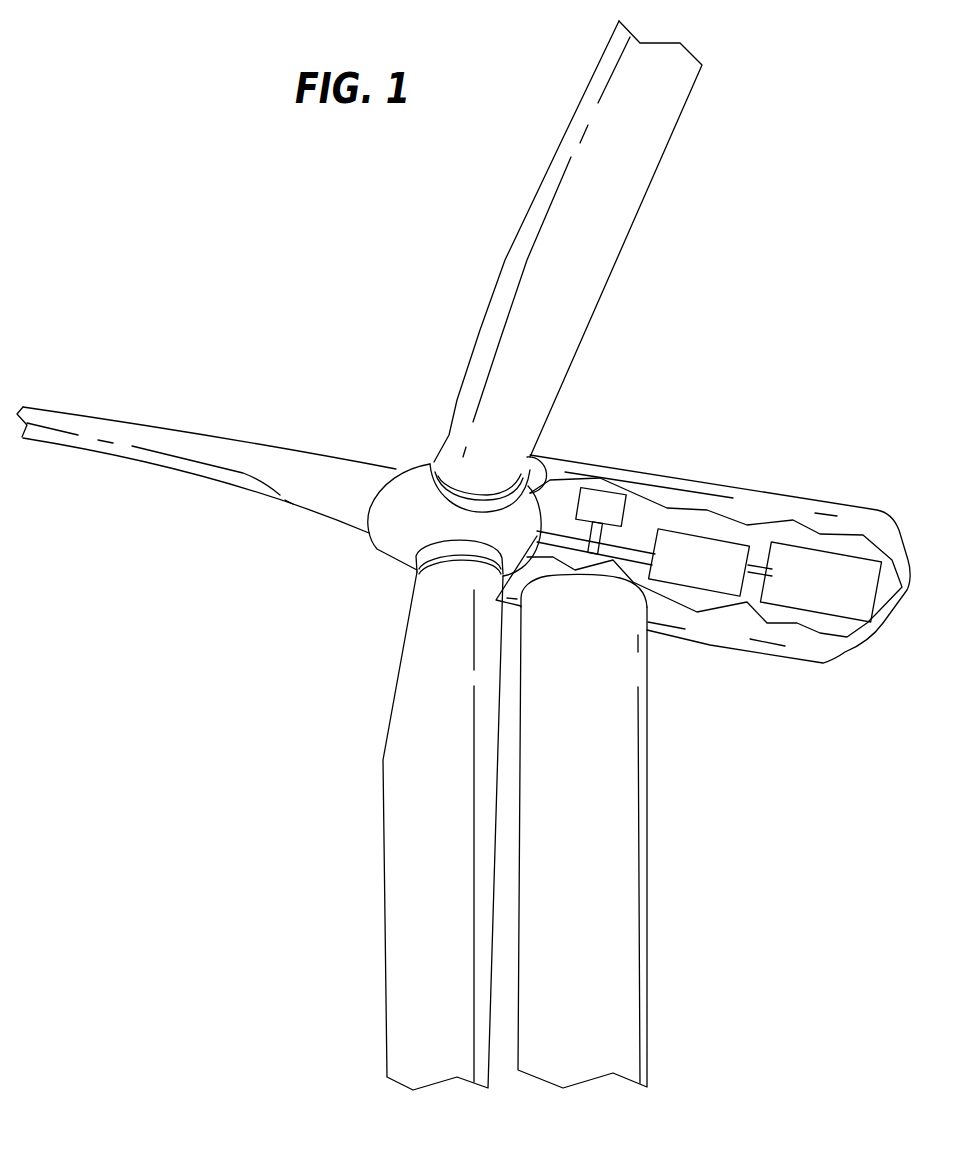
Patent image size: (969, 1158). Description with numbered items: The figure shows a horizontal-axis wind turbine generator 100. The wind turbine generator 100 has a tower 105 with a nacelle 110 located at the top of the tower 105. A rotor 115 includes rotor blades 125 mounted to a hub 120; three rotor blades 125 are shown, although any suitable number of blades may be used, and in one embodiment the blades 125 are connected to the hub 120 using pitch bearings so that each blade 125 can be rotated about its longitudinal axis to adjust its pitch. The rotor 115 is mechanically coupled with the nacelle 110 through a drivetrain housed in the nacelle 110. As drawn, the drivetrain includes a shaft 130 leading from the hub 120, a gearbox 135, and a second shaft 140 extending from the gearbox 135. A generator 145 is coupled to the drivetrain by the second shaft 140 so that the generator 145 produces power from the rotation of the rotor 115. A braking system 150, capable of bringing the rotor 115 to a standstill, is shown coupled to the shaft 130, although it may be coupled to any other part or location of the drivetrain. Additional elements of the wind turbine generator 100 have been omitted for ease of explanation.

The wind turbine generator 100 is at (887, 308).
The tower 105 is at (657, 780).
The nacelle 110 is at (655, 442).
The rotor 115 is at (410, 435).
The hub 120 is at (408, 528).
The rotor blades 125 is at (500, 293).
The shaft 130 is at (560, 537).
The gearbox 135 is at (702, 594).
The second shaft 140 is at (762, 565).
The generator 145 is at (837, 623).
The braking system 150 is at (598, 522).